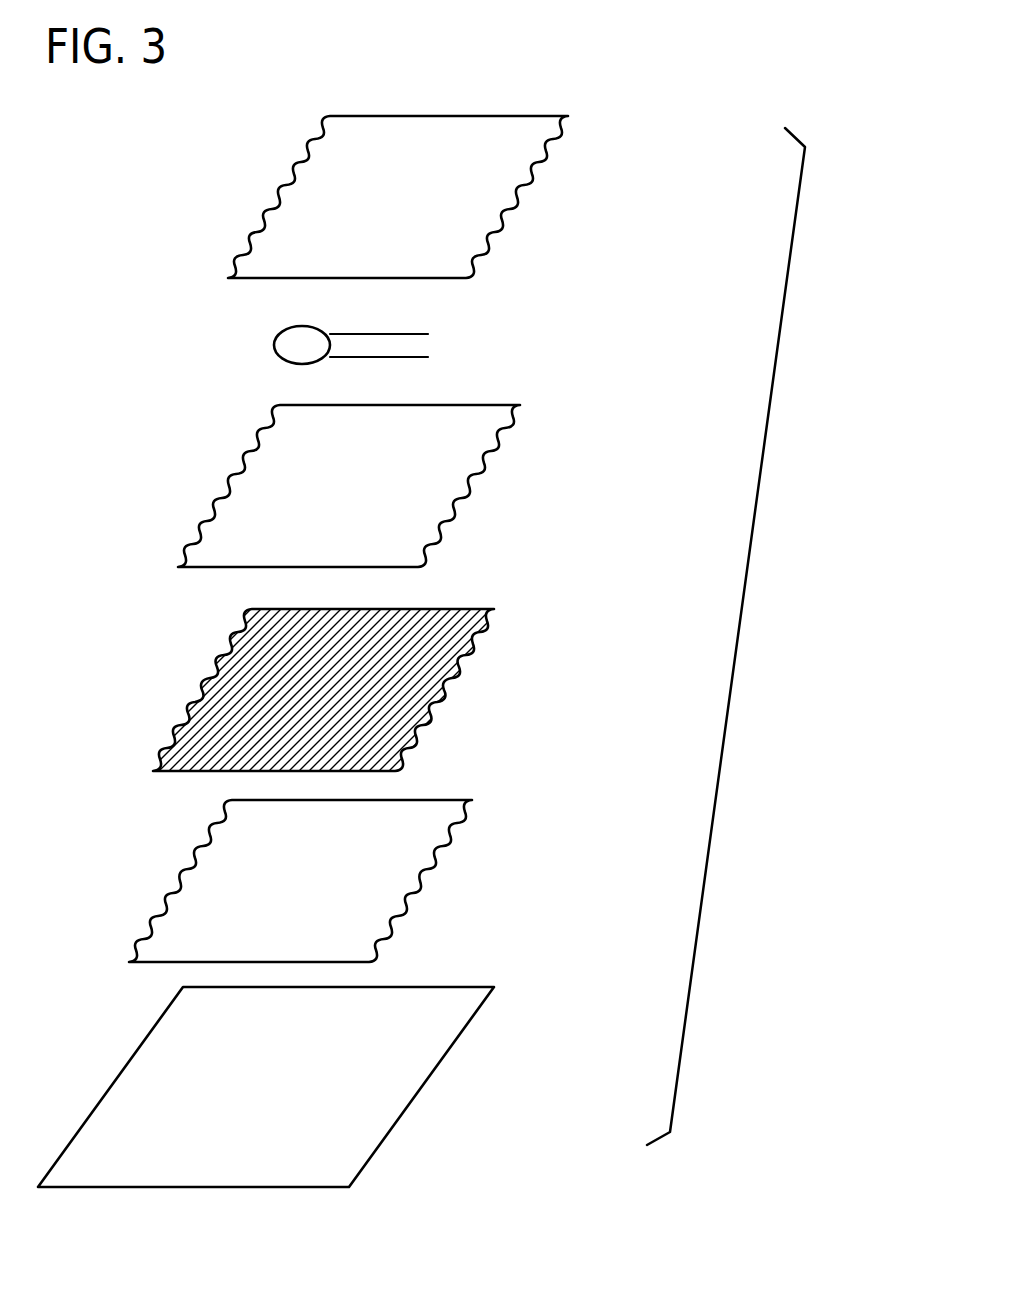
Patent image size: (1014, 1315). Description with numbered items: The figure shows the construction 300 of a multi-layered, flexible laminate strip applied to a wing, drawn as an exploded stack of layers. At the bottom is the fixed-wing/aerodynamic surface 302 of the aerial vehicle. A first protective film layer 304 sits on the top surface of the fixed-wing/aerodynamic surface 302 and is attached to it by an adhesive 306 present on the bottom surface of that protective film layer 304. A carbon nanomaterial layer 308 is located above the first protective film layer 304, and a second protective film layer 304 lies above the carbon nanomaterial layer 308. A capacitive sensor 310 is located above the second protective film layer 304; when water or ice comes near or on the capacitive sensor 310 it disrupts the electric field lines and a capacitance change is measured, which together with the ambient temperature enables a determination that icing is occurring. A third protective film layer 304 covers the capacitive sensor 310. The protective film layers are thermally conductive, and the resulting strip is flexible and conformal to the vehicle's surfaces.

The construction 300 is at (684, 50).
The fixed-wing/aerodynamic surface 302 is at (360, 1119).
The protective film layer 304 is at (455, 840).
The adhesive 306 is at (428, 918).
The carbon nanomaterial layer 308 is at (568, 703).
The capacitive sensor 310 is at (275, 345).